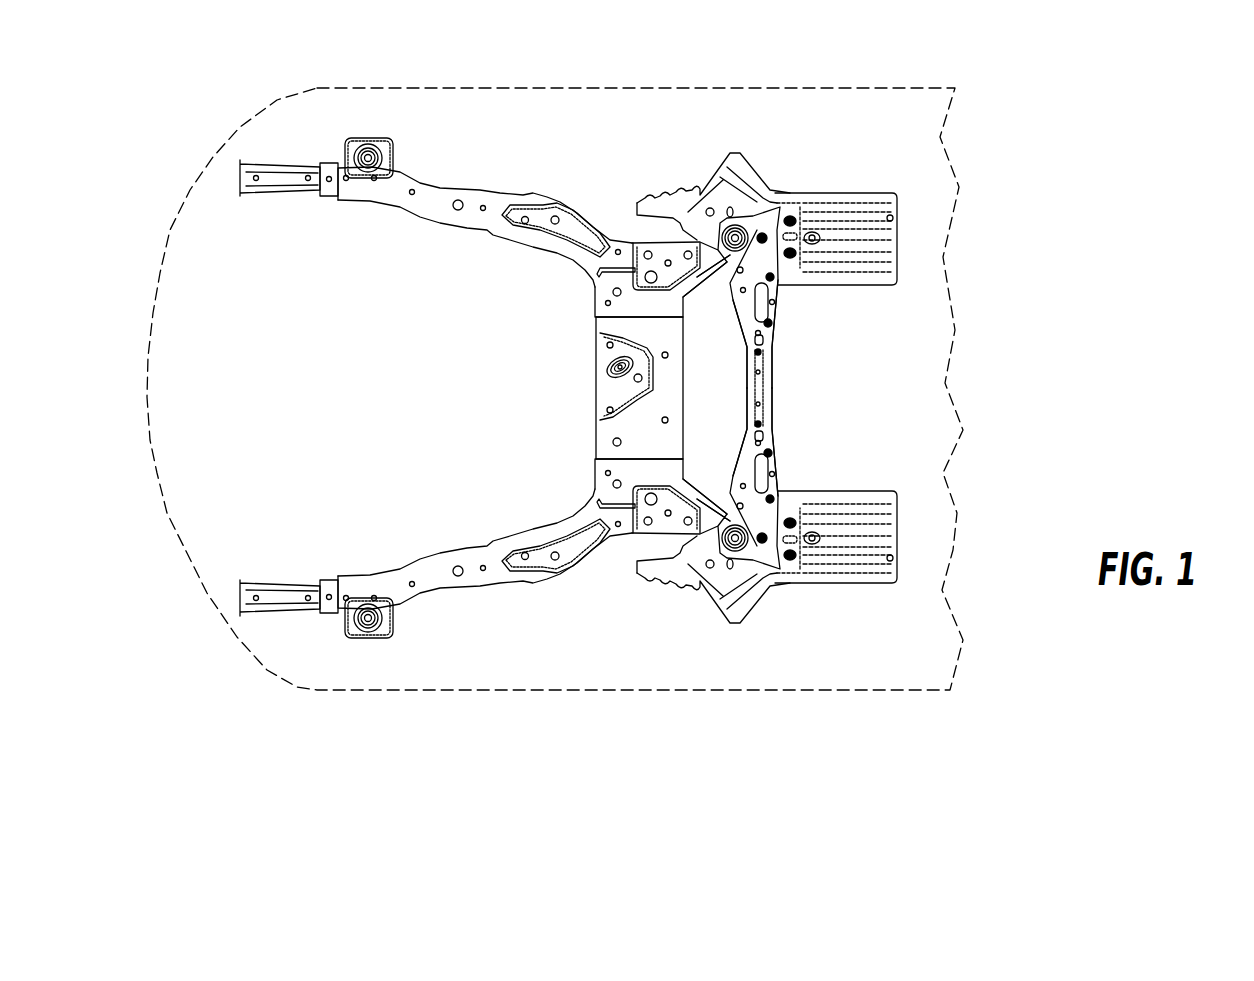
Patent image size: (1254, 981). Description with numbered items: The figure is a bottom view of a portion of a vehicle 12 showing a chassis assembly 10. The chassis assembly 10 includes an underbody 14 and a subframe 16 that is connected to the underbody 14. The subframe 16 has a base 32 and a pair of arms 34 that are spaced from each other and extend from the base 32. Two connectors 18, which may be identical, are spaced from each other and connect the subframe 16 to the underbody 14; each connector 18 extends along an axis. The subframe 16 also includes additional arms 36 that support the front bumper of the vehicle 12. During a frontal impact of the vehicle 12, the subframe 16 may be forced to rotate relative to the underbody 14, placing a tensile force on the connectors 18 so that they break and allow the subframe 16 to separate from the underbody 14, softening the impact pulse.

The chassis assembly 10 is at (614, 369).
The vehicle 12 is at (641, 57).
The underbody 14 is at (890, 238).
The subframe 16 is at (546, 390).
The connector 18 is at (737, 237).
The base 32 is at (603, 435).
The arm 34 is at (698, 277).
The additional arms 36 is at (437, 222).